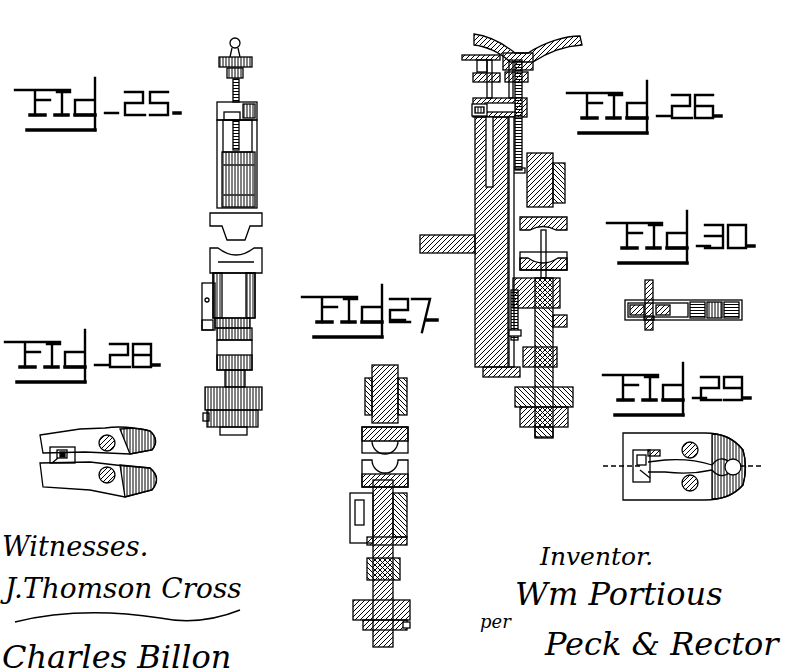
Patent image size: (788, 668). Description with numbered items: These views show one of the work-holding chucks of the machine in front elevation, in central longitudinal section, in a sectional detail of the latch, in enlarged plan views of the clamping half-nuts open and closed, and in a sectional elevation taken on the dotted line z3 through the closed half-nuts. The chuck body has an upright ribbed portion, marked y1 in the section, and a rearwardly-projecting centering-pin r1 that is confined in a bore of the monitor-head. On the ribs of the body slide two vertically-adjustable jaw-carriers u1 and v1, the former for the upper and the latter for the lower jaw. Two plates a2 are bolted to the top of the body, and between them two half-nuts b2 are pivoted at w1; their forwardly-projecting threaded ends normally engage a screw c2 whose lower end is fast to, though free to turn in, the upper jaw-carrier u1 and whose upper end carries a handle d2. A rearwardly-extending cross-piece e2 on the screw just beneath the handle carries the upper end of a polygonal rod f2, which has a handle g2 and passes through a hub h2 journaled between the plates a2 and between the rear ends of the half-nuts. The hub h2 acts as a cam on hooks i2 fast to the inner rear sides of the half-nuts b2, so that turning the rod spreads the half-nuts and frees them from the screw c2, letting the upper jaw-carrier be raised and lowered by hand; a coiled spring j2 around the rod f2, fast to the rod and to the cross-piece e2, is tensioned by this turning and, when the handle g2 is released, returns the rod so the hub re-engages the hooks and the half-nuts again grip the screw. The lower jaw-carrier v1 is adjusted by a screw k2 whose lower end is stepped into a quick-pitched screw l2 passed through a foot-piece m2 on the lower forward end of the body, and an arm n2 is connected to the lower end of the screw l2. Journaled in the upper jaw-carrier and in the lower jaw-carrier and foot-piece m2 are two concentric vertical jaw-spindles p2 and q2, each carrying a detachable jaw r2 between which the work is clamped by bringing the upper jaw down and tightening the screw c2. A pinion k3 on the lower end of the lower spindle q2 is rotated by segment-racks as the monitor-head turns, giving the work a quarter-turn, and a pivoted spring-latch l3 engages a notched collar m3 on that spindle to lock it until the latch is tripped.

In FIG. 25, the handle d2 is at (245, 58).
In FIG. 26, the handle d2 is at (545, 44).
In FIG. 25, the cross-piece e2 is at (243, 74).
In FIG. 26, the cross-piece e2 is at (530, 79).
In FIG. 25, the screw c2 is at (232, 89).
In FIG. 26, the screw c2 is at (523, 140).
In FIG. 25, the half-nuts b2 is at (257, 109).
In FIG. 26, the half-nuts b2 is at (528, 107).
In FIG. 28, the half-nuts b2 is at (152, 441).
In FIG. 29, the half-nuts b2 is at (730, 446).
In FIG. 30, the half-nuts b2 is at (700, 300).
In FIG. 25, the upper jaw-carrier u1 is at (255, 166).
In FIG. 26, the upper jaw-carrier u1 is at (565, 180).
In FIG. 27, the upper jaw-carrier u1 is at (407, 400).
In FIG. 25, the centering-pin r1 is at (262, 219).
In FIG. 26, the centering-pin r1 is at (446, 235).
In FIG. 25, the lower jaw-carrier v1 is at (255, 290).
In FIG. 26, the lower jaw-carrier v1 is at (560, 292).
In FIG. 25, the spring-latch l3 is at (205, 301).
In FIG. 27, the spring-latch l3 is at (350, 525).
In FIG. 25, the notched collar m3 is at (250, 323).
In FIG. 26, the notched collar m3 is at (567, 322).
In FIG. 27, the notched collar m3 is at (407, 530).
In FIG. 25, the foot-piece m2 is at (252, 360).
In FIG. 26, the foot-piece m2 is at (557, 362).
In FIG. 27, the foot-piece m2 is at (400, 568).
In FIG. 25, the pinion k3 is at (262, 396).
In FIG. 26, the pinion k3 is at (573, 405).
In FIG. 27, the pinion k3 is at (410, 606).
In FIG. 26, the handle g2 is at (475, 44).
In FIG. 26, the coiled spring j2 is at (462, 58).
In FIG. 26, the rod f2 is at (473, 77).
In FIG. 28, the rod f2 is at (62, 466).
In FIG. 29, the rod f2 is at (640, 478).
In FIG. 30, the rod f2 is at (654, 296).
In FIG. 26, the plates a2 is at (487, 90).
In FIG. 26, the hub h2 is at (472, 110).
In FIG. 28, the hub h2 is at (70, 447).
In FIG. 30, the hub h2 is at (644, 320).
In FIG. 26, the column y1 is at (475, 168).
In FIG. 26, the upper jaw-spindle p2 is at (553, 158).
In FIG. 27, the upper jaw-spindle p2 is at (372, 367).
In FIG. 26, the detachable jaws r2 is at (567, 224).
In FIG. 27, the detachable jaws r2 is at (408, 436).
In FIG. 26, the lower jaw-spindle q2 is at (553, 304).
In FIG. 27, the lower jaw-spindle q2 is at (373, 590).
In FIG. 26, the screw k2 is at (510, 329).
In FIG. 26, the quick-pitched screw l2 is at (557, 347).
In FIG. 26, the arm n2 is at (494, 377).
In FIG. 29, the arm n2 is at (652, 456).
In FIG. 28, the hooks i2 is at (76, 447).
In FIG. 29, the hooks i2 is at (640, 466).
In FIG. 30, the hooks i2 is at (671, 329).
In FIG. 28, the pivot w1 is at (112, 436).
In FIG. 29, the pivot w1 is at (696, 446).
In FIG. 29, the section line z3 is at (679, 466).